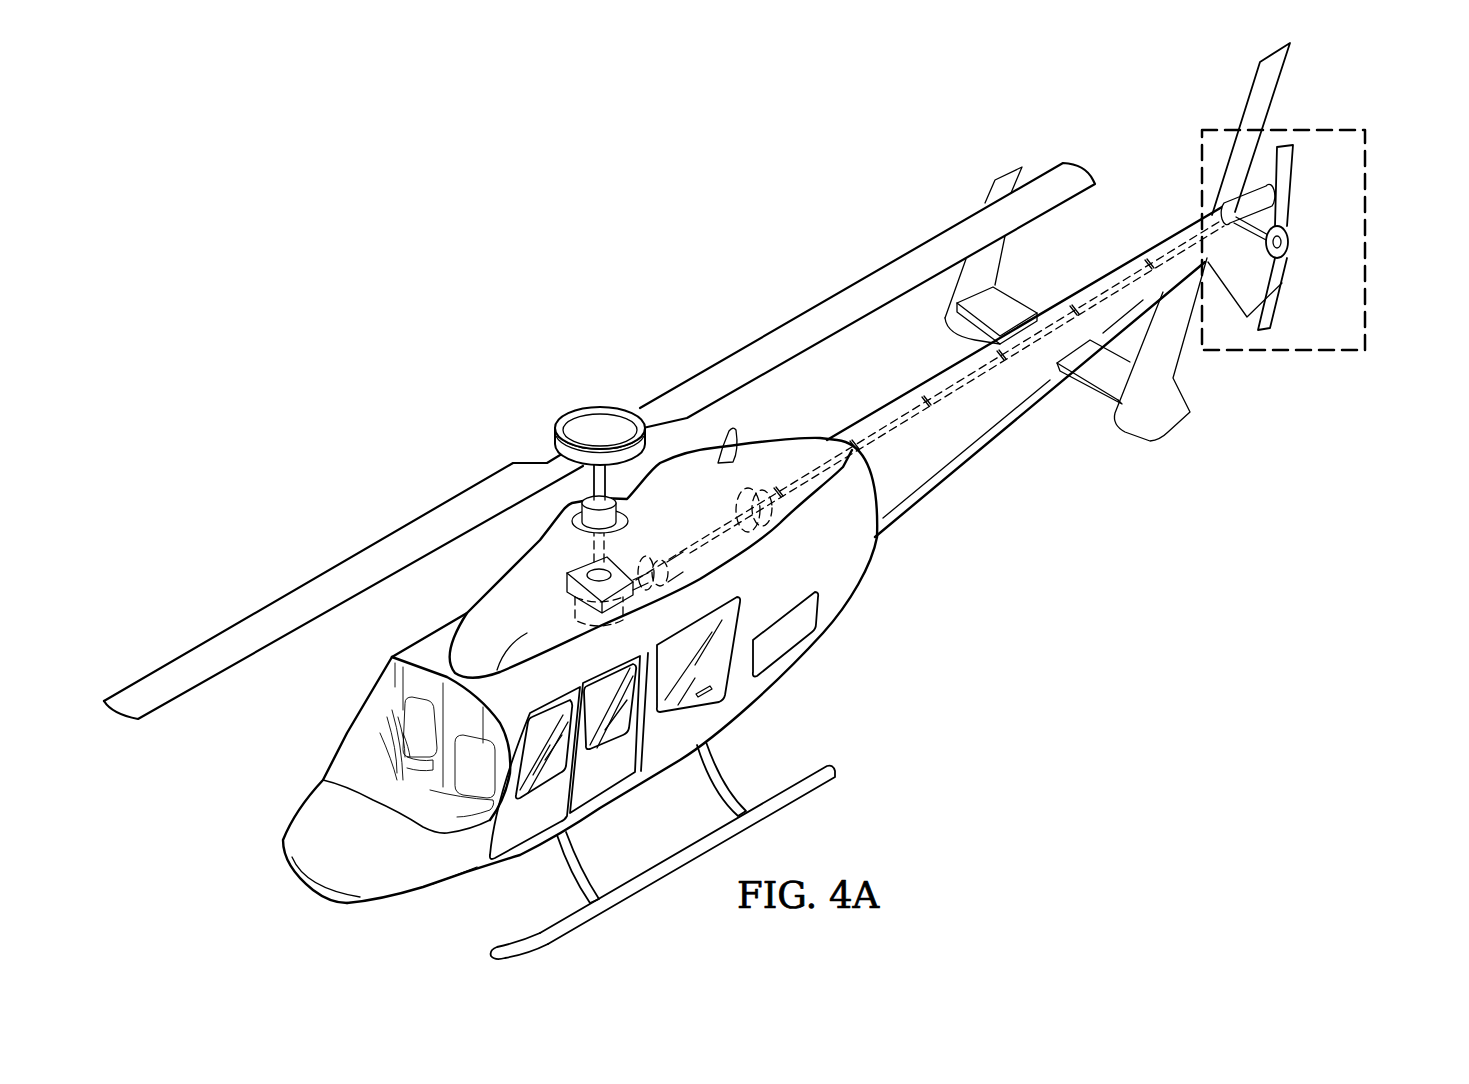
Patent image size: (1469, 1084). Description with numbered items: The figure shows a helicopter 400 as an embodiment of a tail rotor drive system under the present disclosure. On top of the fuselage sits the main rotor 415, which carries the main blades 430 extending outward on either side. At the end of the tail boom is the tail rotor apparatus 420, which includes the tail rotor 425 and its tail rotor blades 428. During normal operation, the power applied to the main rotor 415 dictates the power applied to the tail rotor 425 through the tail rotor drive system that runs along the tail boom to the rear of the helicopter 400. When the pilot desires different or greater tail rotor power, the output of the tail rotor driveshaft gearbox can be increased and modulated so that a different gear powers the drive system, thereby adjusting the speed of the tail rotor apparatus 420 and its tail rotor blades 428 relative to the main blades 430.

The helicopter 400 is at (361, 281).
The main rotor 415 is at (563, 378).
The tail rotor apparatus 420 is at (1390, 244).
The tail rotor 425 is at (1325, 130).
The tail rotor blades 428 is at (1277, 304).
The main blades 430 is at (282, 596).